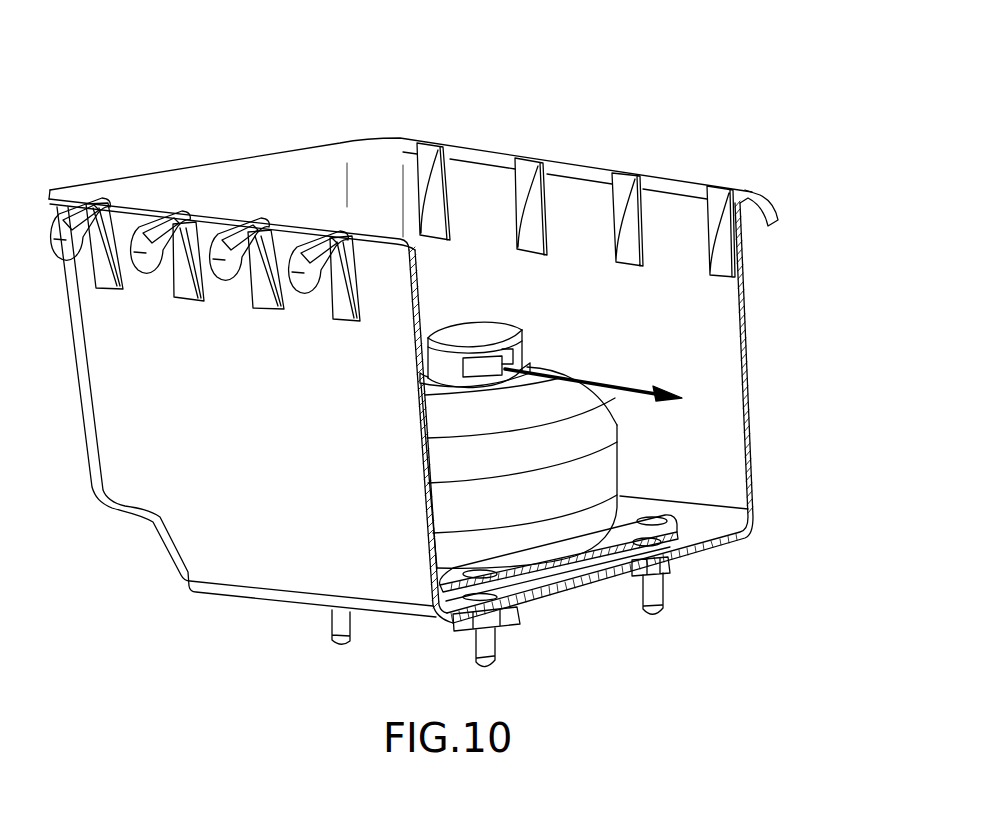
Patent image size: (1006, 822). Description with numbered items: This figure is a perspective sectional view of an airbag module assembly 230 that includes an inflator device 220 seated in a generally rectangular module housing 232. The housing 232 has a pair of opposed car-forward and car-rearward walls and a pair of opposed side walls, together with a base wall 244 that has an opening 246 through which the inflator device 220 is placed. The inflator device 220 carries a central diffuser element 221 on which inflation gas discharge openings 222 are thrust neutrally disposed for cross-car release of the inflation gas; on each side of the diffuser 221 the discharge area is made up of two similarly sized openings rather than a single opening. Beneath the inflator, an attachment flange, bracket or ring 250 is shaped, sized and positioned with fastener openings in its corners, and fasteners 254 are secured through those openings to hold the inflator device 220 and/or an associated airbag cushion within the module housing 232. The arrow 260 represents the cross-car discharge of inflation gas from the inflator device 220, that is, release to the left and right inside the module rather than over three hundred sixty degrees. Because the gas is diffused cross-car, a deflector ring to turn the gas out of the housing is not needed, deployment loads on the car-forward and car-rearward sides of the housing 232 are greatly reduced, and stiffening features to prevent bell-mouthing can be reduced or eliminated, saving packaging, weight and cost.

The inflator device 220 is at (560, 395).
The central diffuser element 221 is at (496, 305).
The inflation gas discharge openings 222 is at (489, 358).
The airbag module assembly 230 is at (503, 334).
The module housing 232 is at (199, 448).
The base wall 244 is at (718, 538).
The opening 246 is at (593, 563).
The attachment flange, bracket or ring 250 is at (503, 573).
The fasteners 254 is at (470, 648).
The arrows 260 is at (640, 378).